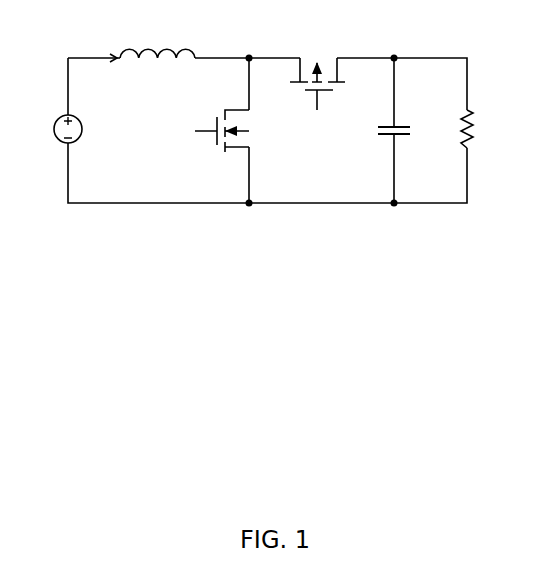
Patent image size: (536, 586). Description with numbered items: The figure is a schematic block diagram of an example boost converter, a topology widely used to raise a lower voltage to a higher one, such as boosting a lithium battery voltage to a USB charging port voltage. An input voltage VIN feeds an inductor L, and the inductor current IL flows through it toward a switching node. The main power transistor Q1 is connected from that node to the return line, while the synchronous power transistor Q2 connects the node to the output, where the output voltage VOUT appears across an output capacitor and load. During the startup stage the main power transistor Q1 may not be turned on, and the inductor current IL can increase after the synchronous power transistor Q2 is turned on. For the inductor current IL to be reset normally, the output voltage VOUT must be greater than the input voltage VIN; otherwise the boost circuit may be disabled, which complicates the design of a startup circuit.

The inductor L is at (157, 42).
The inductor current IL is at (105, 71).
The input voltage VIN is at (48, 129).
The main power transistor Q1 is at (222, 146).
The synchronous power transistor Q2 is at (311, 87).
The output voltage VOUT is at (410, 81).